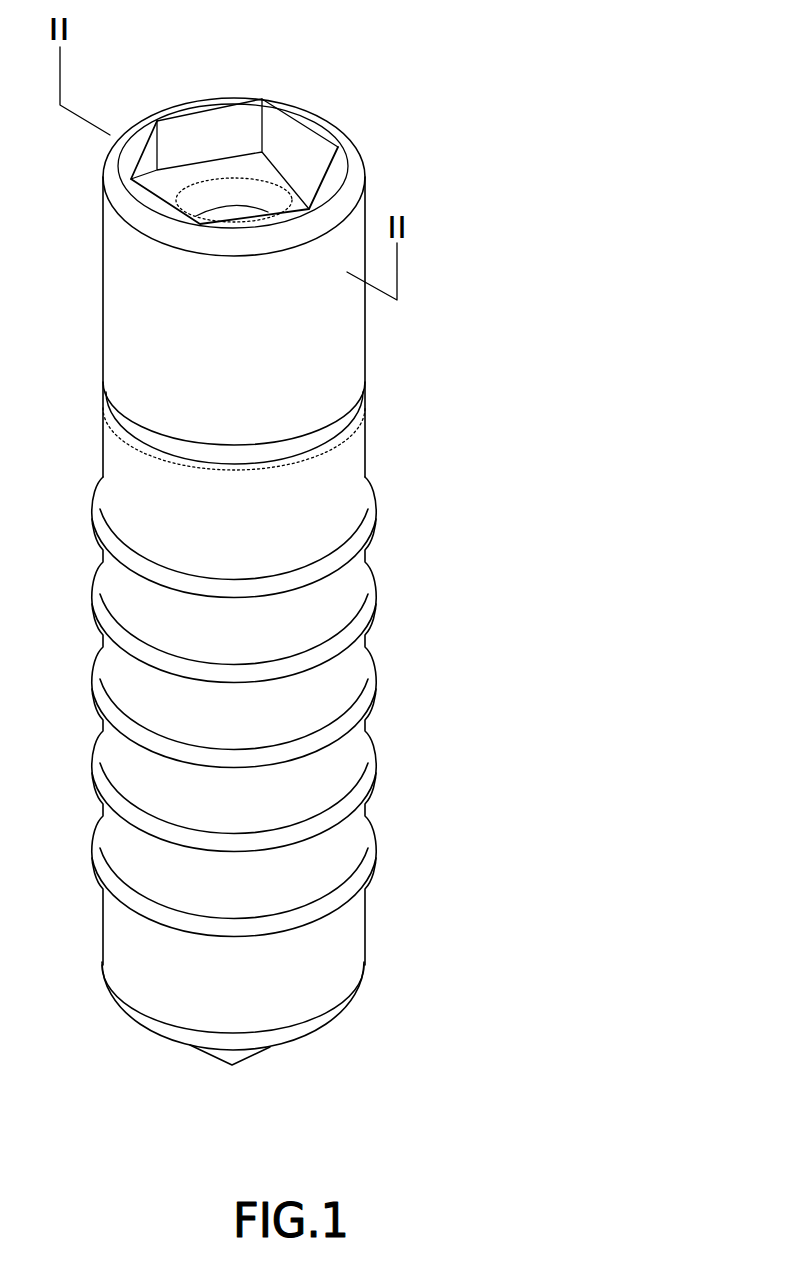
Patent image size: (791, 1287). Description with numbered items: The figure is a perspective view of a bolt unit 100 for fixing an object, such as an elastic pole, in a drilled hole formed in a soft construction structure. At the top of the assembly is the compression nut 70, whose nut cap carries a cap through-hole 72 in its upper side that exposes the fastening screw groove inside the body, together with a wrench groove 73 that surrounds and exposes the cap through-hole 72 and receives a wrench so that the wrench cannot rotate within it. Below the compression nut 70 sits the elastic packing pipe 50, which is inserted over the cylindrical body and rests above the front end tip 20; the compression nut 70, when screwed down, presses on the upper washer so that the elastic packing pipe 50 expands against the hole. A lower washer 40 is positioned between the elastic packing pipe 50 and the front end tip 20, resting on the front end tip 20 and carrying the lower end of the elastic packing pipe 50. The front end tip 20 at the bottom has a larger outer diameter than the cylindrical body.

The bolt unit 100 is at (442, 128).
The compression nut 70 is at (312, 328).
The cap through-hole 72 is at (230, 192).
The wrench groove 73 is at (303, 150).
The elastic packing pipe 50 is at (327, 600).
The lower washer 40 is at (345, 1002).
The front end tip 20 is at (268, 1052).